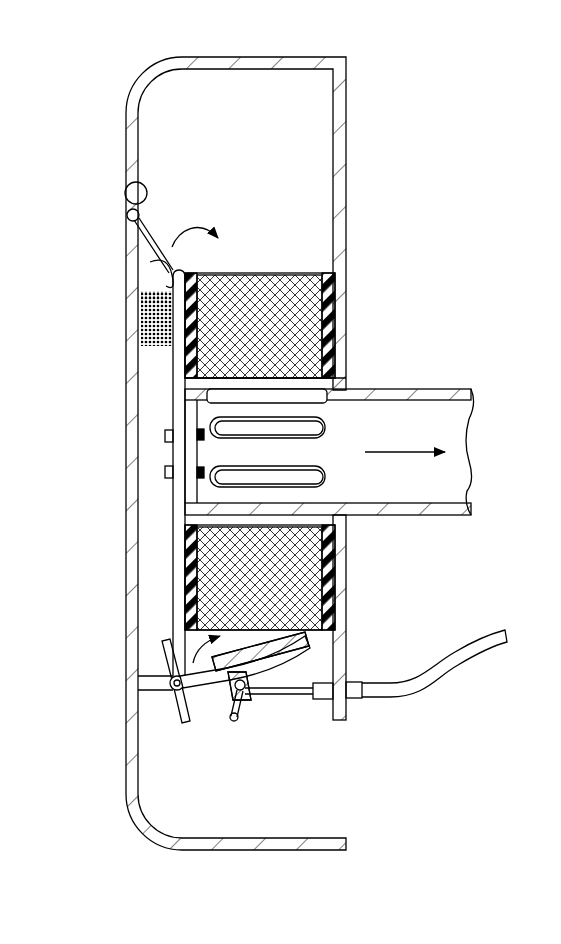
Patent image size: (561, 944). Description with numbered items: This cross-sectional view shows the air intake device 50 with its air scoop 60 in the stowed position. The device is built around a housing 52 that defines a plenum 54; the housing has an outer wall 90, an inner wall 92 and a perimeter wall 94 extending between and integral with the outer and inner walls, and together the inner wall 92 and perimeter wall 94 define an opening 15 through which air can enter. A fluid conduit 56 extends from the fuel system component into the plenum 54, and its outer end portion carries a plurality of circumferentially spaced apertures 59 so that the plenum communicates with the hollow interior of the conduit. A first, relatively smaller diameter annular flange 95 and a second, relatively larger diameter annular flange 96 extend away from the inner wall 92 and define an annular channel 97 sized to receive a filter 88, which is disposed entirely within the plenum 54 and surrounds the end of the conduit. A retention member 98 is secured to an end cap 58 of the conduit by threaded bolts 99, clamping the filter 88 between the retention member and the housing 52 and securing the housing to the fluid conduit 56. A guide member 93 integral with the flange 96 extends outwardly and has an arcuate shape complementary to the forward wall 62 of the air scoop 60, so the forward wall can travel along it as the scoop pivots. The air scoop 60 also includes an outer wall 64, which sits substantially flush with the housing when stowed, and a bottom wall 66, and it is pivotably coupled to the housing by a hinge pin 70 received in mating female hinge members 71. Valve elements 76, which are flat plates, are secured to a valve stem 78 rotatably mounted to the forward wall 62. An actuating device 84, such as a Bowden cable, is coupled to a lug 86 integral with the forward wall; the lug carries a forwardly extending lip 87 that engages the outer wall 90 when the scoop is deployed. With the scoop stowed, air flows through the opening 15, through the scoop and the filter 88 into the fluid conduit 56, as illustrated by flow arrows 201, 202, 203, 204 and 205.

The opening 15 is at (336, 752).
The air intake device 50 is at (408, 104).
The housing 52 is at (222, 57).
The plenum 54 is at (223, 150).
The fluid conduit 56 is at (431, 388).
The end cap 58 is at (168, 438).
The apertures 59 is at (322, 429).
The air scoop 60 is at (114, 555).
The forward wall 62 is at (330, 648).
The outer wall 64 is at (132, 306).
The bottom wall 66 is at (158, 270).
The hinge pin 70 is at (128, 222).
The female hinge members 71 is at (127, 192).
The valve elements 76 is at (138, 742).
The valve stem 78 is at (170, 690).
The actuating device 84 is at (431, 684).
The lug 86 is at (242, 689).
The lip 87 is at (233, 716).
The filter 88 is at (277, 273).
The outer wall 90 is at (128, 150).
The inner wall 92 is at (346, 195).
The guide member 93 is at (253, 640).
The perimeter wall 94 is at (287, 57).
The first annular flange 95 is at (330, 378).
The second annular flange 96 is at (338, 269).
The annular channel 97 is at (338, 333).
The retention member 98 is at (176, 372).
The threaded bolts 99 is at (168, 472).
The flow arrow 201 is at (320, 790).
The flow arrow 202 is at (180, 746).
The flow arrow 203 is at (152, 655).
The flow arrow 204 is at (199, 222).
The flow arrow 205 is at (417, 452).